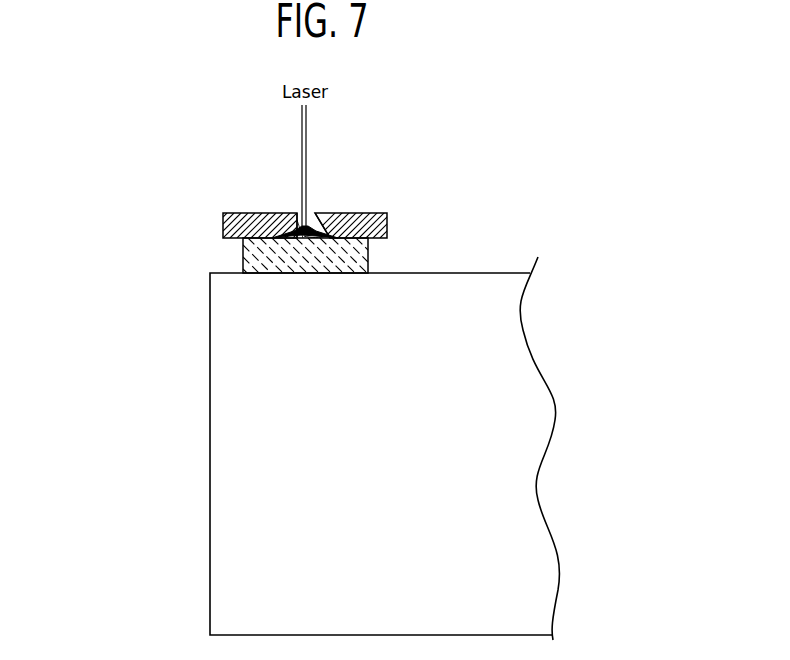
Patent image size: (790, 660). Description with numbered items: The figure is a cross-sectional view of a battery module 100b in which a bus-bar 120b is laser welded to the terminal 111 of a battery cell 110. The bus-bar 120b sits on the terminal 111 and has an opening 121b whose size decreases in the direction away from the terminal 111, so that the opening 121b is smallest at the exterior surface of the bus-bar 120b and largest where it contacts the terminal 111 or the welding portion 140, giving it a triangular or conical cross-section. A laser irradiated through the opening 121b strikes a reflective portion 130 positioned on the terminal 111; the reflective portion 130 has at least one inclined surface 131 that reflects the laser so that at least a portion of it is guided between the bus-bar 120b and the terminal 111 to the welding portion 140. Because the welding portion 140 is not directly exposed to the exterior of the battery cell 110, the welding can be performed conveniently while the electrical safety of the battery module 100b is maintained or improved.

The battery module 100b is at (105, 132).
The battery cell 110 is at (196, 407).
The terminal 111 is at (243, 253).
The bus-bar 120b is at (388, 193).
The opening 121b is at (296, 225).
The reflective portion 130 is at (300, 250).
The inclined surface 131 is at (323, 250).
The welding portion 140 is at (223, 229).